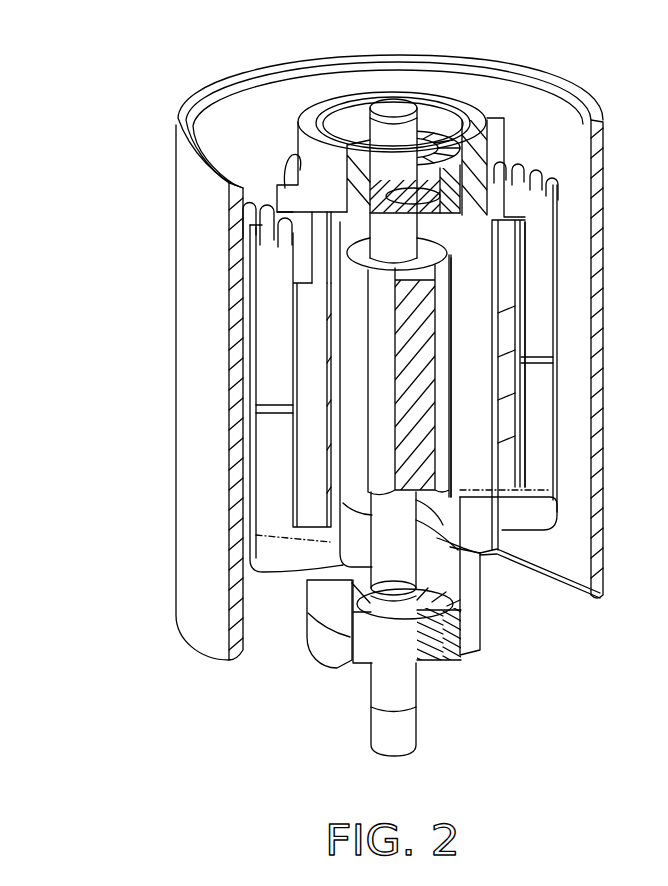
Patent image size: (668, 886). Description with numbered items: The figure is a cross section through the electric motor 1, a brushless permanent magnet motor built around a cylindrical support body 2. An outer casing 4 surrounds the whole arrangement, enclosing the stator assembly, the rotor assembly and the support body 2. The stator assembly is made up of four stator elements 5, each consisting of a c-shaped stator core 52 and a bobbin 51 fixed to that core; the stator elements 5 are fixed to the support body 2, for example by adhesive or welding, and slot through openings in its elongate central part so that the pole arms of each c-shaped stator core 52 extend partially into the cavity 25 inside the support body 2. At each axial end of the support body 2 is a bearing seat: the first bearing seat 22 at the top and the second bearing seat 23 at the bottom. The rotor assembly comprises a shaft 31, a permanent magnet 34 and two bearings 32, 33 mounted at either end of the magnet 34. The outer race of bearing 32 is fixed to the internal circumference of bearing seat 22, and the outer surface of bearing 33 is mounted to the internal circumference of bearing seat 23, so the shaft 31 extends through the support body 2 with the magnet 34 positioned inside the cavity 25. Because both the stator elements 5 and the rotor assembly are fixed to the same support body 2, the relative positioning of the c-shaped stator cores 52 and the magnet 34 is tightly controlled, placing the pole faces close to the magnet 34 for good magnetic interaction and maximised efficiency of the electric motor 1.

The electric motor 1 is at (113, 78).
The support body 2 is at (264, 156).
The outer casing 4 is at (551, 117).
The stator element 5 is at (391, 367).
The first bearing seat 22 is at (298, 140).
The second bearing seat 23 is at (333, 652).
The cavity 25 is at (421, 537).
The shaft 31 is at (407, 720).
The bearing 32 is at (434, 135).
The bearing 33 is at (423, 627).
The magnet 34 is at (384, 330).
The bobbin 51 is at (537, 243).
The c-shaped stator core 52 is at (478, 396).